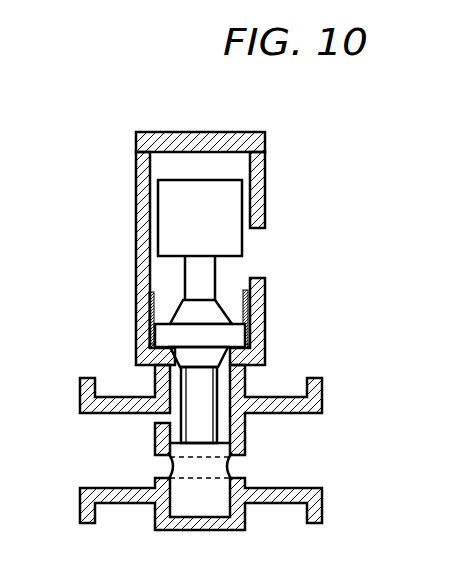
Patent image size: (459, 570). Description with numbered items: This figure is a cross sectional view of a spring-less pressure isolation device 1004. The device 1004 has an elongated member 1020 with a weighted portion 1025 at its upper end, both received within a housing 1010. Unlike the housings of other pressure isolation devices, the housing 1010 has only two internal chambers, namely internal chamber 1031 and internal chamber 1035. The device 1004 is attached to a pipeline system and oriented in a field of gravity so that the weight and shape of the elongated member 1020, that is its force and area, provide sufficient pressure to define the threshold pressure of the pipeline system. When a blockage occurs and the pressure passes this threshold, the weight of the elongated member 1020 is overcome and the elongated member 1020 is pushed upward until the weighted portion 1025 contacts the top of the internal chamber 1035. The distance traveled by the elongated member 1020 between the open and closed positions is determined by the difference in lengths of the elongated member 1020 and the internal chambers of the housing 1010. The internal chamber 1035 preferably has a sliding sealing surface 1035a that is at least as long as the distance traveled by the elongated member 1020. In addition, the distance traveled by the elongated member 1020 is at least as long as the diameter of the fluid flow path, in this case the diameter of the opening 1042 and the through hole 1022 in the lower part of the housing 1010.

The pressure isolation device 1004 is at (305, 134).
The housing 1010 is at (162, 131).
The elongated member 1020 is at (220, 283).
The through hole 1022 is at (238, 468).
The weighted portion 1025 is at (230, 205).
The internal chamber 1031 is at (177, 390).
The internal chamber 1035 is at (186, 163).
The sliding sealing surface 1035a is at (241, 302).
The opening 1042 is at (157, 468).